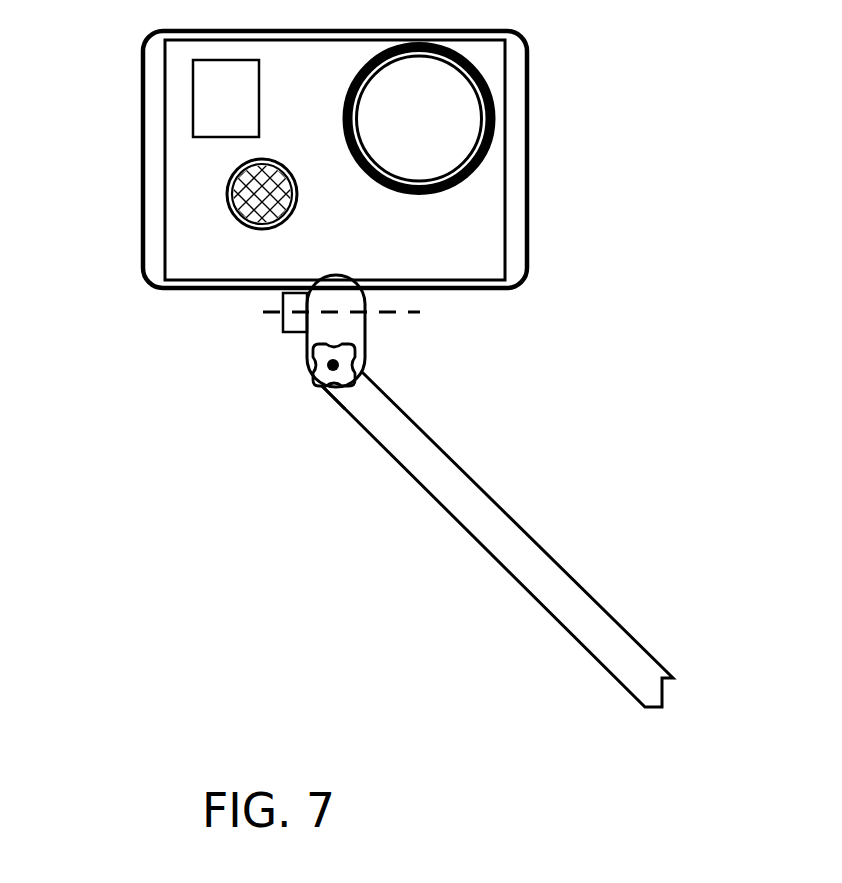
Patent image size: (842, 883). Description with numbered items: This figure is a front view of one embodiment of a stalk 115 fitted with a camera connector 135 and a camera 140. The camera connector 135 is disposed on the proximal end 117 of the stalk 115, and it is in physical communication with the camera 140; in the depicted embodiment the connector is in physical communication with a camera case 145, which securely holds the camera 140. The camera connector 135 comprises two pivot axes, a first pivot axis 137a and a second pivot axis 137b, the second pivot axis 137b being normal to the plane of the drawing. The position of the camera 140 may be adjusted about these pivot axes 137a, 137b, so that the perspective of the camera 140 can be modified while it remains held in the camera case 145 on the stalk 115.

The stalk 115 is at (615, 678).
The proximal end 117 is at (340, 405).
The camera connector 135 is at (307, 360).
The first pivot axis 137a is at (263, 312).
The second pivot axis 137b is at (333, 365).
The camera 140 is at (165, 160).
The camera case 145 is at (143, 237).